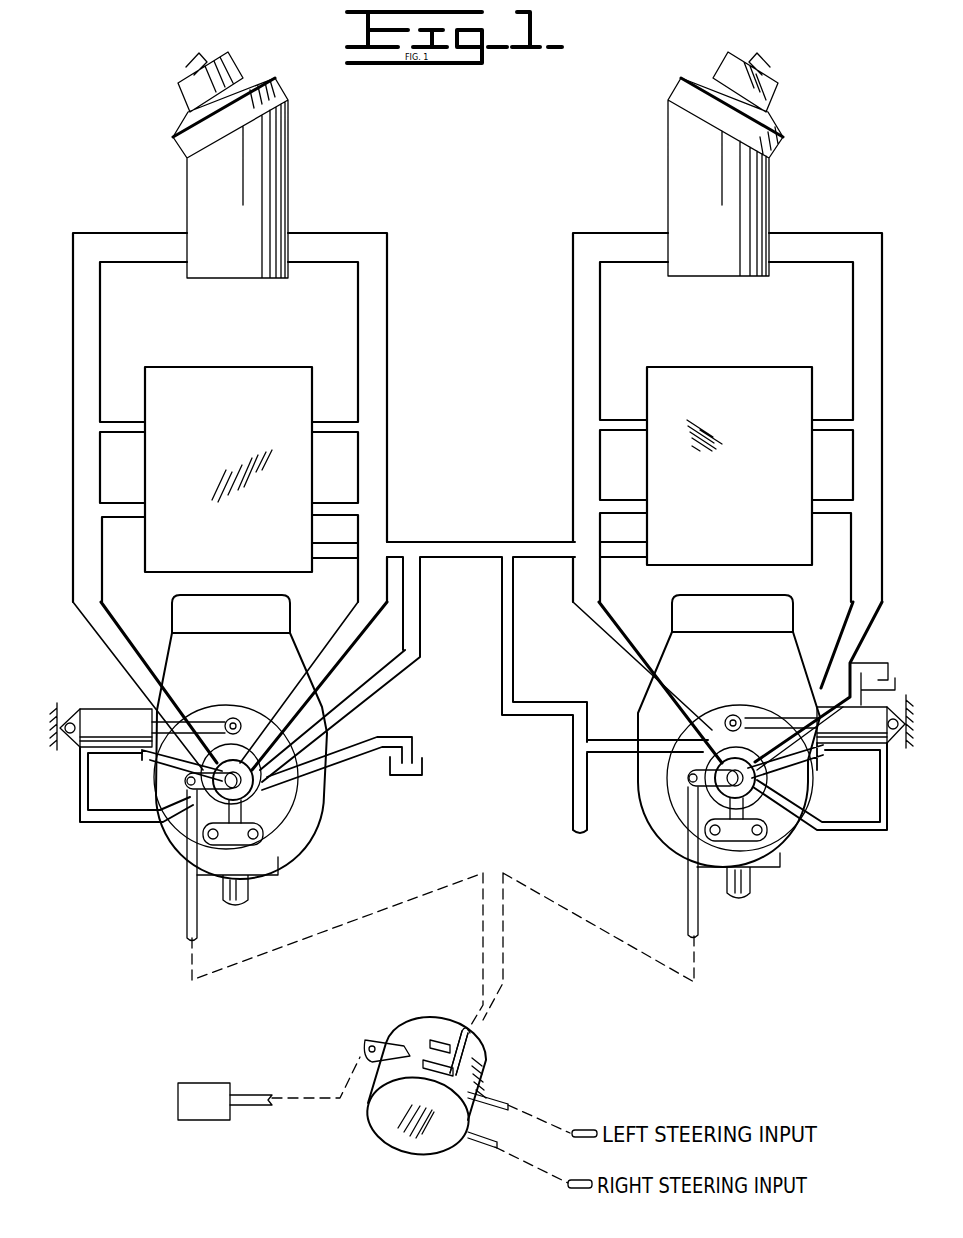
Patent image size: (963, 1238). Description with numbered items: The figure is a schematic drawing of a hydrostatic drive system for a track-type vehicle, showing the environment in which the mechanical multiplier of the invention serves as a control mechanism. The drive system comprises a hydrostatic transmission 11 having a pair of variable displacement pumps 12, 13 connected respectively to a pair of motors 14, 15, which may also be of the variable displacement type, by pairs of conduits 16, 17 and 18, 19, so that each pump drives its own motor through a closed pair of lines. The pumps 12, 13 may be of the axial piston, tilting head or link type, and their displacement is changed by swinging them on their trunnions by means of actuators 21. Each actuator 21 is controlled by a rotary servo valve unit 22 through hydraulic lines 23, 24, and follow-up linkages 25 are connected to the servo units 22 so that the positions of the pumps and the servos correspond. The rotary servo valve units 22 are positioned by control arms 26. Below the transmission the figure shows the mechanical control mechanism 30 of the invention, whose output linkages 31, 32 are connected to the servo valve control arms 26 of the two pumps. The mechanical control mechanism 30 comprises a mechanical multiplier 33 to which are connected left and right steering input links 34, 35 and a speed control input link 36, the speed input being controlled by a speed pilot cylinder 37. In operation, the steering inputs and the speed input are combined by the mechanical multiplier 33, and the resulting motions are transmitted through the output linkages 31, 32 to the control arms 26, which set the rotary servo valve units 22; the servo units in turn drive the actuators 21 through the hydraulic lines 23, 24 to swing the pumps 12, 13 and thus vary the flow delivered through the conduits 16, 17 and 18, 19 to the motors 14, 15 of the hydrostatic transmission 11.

The hydrostatic transmission 11 is at (470, 140).
The variable displacement pump 12 is at (240, 681).
The variable displacement pump 13 is at (750, 679).
The motor 14 is at (297, 119).
The motor 15 is at (656, 103).
The conduit 16 is at (98, 330).
The conduit 17 is at (358, 318).
The conduit 18 is at (573, 323).
The conduit 19 is at (862, 305).
The actuator 21 is at (105, 716).
The rotary servo valve unit 22 is at (243, 718).
The hydraulic line 23 is at (80, 778).
The hydraulic line 24 is at (146, 771).
The follow-up linkage 25 is at (255, 848).
The control arm 26 is at (197, 822).
The mechanical control mechanism 30 is at (424, 1168).
The output linkage 31 is at (200, 936).
The output linkage 32 is at (688, 880).
The mechanical multiplier 33 is at (480, 1062).
The left steering input link 34 is at (575, 1185).
The right steering input link 35 is at (582, 1128).
The speed control input link 36 is at (254, 1097).
The speed pilot cylinder 37 is at (214, 1142).